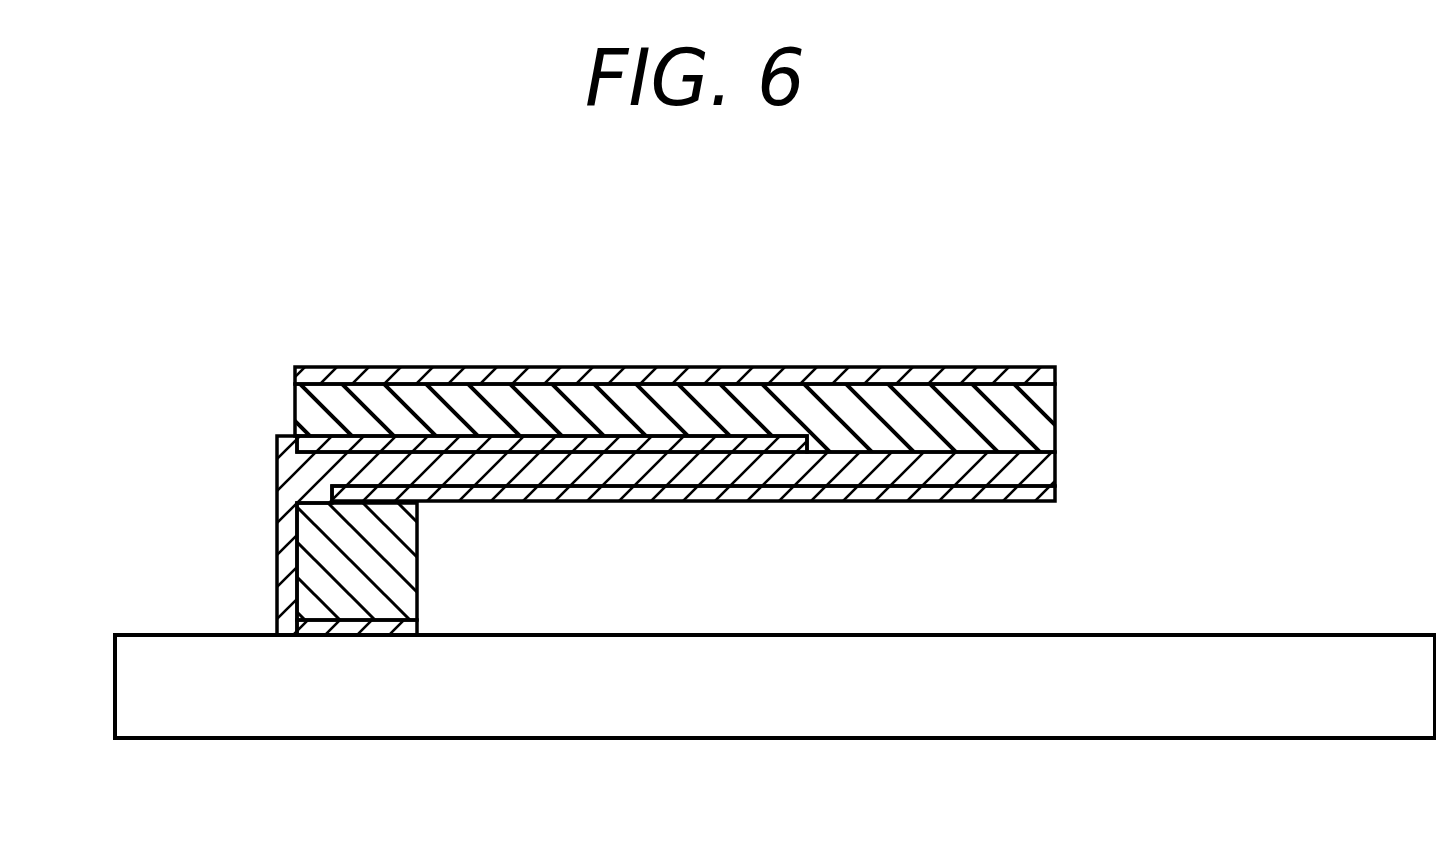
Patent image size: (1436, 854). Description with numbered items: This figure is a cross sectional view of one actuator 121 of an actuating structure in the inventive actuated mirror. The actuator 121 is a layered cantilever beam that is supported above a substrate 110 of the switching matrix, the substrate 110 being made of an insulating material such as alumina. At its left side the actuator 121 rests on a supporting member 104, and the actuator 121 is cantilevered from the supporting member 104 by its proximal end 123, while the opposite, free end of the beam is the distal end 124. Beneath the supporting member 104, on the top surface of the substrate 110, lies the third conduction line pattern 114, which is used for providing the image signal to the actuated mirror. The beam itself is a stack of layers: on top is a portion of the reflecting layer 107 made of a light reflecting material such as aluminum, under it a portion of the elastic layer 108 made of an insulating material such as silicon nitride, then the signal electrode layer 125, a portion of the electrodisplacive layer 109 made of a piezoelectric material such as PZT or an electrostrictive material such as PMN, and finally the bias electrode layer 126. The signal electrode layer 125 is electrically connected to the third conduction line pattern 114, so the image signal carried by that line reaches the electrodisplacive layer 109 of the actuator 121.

The supporting member 104 is at (390, 538).
The reflecting layer 107 is at (570, 375).
The elastic layer 108 is at (663, 398).
The electrodisplacive layer 109 is at (1040, 471).
The substrate 110 is at (818, 652).
The third conduction line pattern 114 is at (410, 627).
The actuator 121 is at (734, 345).
The proximal end 123 is at (422, 265).
The distal end 124 is at (1055, 265).
The signal electrode layer 125 is at (760, 445).
The bias electrode layer 126 is at (1043, 493).